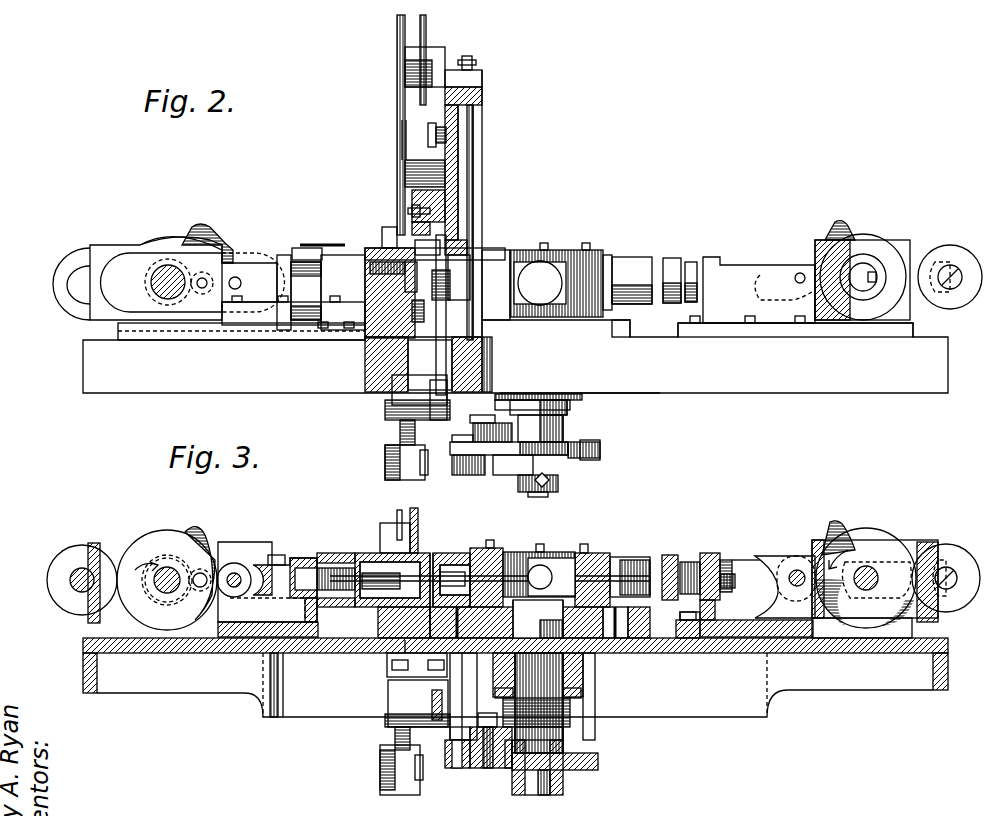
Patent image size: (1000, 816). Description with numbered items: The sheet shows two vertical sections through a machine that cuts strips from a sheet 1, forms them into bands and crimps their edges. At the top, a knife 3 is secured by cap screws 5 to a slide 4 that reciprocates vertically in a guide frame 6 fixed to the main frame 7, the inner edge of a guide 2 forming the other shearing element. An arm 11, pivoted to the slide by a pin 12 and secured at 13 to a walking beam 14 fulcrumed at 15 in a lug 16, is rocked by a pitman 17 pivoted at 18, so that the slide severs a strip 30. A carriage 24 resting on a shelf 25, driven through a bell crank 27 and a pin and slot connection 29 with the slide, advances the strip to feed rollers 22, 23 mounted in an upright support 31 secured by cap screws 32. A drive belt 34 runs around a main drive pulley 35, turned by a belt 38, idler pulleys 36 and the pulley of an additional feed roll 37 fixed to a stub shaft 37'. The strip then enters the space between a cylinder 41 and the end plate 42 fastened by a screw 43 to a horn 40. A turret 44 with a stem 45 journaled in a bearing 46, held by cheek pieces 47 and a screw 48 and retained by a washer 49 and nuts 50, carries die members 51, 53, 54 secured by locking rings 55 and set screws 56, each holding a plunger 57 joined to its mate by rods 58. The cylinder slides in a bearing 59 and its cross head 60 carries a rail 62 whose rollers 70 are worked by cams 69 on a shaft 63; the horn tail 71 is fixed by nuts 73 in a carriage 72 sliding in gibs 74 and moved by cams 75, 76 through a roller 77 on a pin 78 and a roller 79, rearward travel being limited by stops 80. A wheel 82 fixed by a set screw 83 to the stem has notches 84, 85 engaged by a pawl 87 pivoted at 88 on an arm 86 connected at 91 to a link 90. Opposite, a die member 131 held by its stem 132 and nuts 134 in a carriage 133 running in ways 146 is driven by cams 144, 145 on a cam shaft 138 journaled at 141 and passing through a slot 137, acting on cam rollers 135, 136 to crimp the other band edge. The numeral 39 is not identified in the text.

In FIG. 2, the sheet 1 is at (312, 242).
In FIG. 2, the guide 2 is at (370, 248).
In FIG. 2, the knife 3 is at (408, 211).
In FIG. 2, the slide 4 is at (465, 195).
In FIG. 2, the cap screws 5 is at (415, 215).
In FIG. 2, the guide frame 6 is at (483, 95).
In FIG. 2, the main frame 7 is at (378, 358).
In FIG. 3, the main frame 7 is at (122, 680).
In FIG. 2, the arm 11 is at (446, 318).
In FIG. 2, the pin 12 is at (478, 258).
In FIG. 2, the pivot connection 13 is at (478, 395).
In FIG. 2, the walking beam 14 is at (440, 420).
In FIG. 2, the fulcrum 15 is at (385, 412).
In FIG. 3, the fulcrum 15 is at (385, 725).
In FIG. 2, the lug 16 is at (410, 360).
In FIG. 3, the lug 16 is at (400, 660).
In FIG. 2, the pitman 17 is at (400, 437).
In FIG. 3, the pitman 17 is at (395, 740).
In FIG. 2, the pivot 18 is at (385, 467).
In FIG. 3, the pivot 18 is at (380, 775).
In FIG. 2, the feed rollers 22 is at (450, 248).
In FIG. 2, the feed rollers 23 is at (412, 315).
In FIG. 2, the carriage 24 is at (395, 289).
In FIG. 2, the shelf 25 is at (455, 280).
In FIG. 2, the bell crank 27 is at (446, 140).
In FIG. 2, the pin and slot connection 29 is at (428, 132).
In FIG. 3, the severed strip 30 is at (440, 595).
In FIG. 2, the upright support 31 is at (485, 76).
In FIG. 2, the cap screws 32 is at (475, 62).
In FIG. 2, the drive belt 34 is at (398, 142).
In FIG. 2, the main drive pulley 35 is at (398, 36).
In FIG. 2, the idler pulleys 36 is at (410, 160).
In FIG. 3, the additional feed roll 37 is at (439, 528).
In FIG. 3, the stub shaft 37' is at (376, 524).
In FIG. 2, the belt 38 is at (427, 27).
In FIG. 2, the bearing 39 is at (387, 277).
In FIG. 3, the horn 40 is at (350, 570).
In FIG. 3, the cylinder 41 is at (368, 553).
In FIG. 3, the end plate 42 is at (450, 565).
In FIG. 3, the screw 43 is at (380, 625).
In FIG. 2, the turret 44 is at (588, 243).
In FIG. 3, the turret 44 is at (588, 544).
In FIG. 2, the stem 45 is at (563, 430).
In FIG. 3, the stem 45 is at (572, 680).
In FIG. 3, the bearing 46 is at (583, 660).
In FIG. 2, the cheek pieces 47 is at (626, 328).
In FIG. 3, the cheek pieces 47 is at (620, 630).
In FIG. 3, the screw 48 is at (689, 627).
In FIG. 2, the washer 49 is at (585, 397).
In FIG. 3, the washer 49 is at (581, 693).
In FIG. 2, the nuts 50 is at (567, 410).
In FIG. 3, the nuts 50 is at (570, 715).
In FIG. 3, the die member 51 is at (455, 566).
In FIG. 2, the die member 53 is at (632, 280).
In FIG. 3, the die member 53 is at (630, 560).
In FIG. 2, the die member 54 is at (523, 290).
In FIG. 2, the locking rings 55 is at (505, 265).
In FIG. 3, the locking rings 55 is at (480, 553).
In FIG. 2, the set screws 56 is at (545, 243).
In FIG. 3, the set screws 56 is at (543, 544).
In FIG. 2, the plunger 57 is at (540, 283).
In FIG. 3, the plunger 57 is at (640, 587).
In FIG. 3, the rods 58 is at (520, 552).
In FIG. 3, the bearing 59 is at (382, 653).
In FIG. 2, the cross head 60 is at (341, 325).
In FIG. 2, the rail 62 is at (328, 292).
In FIG. 2, the shaft 63 is at (167, 290).
In FIG. 3, the shaft 63 is at (155, 578).
In FIG. 2, the cams 69 is at (203, 293).
In FIG. 3, the cams 69 is at (162, 605).
In FIG. 3, the rollers 70 is at (200, 592).
In FIG. 3, the tail 71 is at (322, 653).
In FIG. 2, the carriage 72 is at (262, 318).
In FIG. 3, the carriage 72 is at (302, 608).
In FIG. 3, the nuts 73 is at (318, 556).
In FIG. 2, the gibs 74 is at (248, 340).
In FIG. 3, the gibs 74 is at (450, 720).
In FIG. 2, the cam 75 is at (160, 236).
In FIG. 3, the cam 75 is at (148, 535).
In FIG. 2, the cam 76 is at (200, 228).
In FIG. 3, the cam 76 is at (197, 530).
In FIG. 3, the roller 77 is at (238, 563).
In FIG. 2, the pin 78 is at (236, 277).
In FIG. 3, the pin 78 is at (236, 590).
In FIG. 2, the roller 79 is at (68, 265).
In FIG. 3, the roller 79 is at (62, 565).
In FIG. 2, the stops 80 is at (282, 255).
In FIG. 3, the stops 80 is at (278, 555).
In FIG. 2, the wheel 82 is at (600, 458).
In FIG. 3, the wheel 82 is at (563, 775).
In FIG. 2, the set screw 83 is at (558, 485).
In FIG. 2, the notches 84 is at (568, 448).
In FIG. 3, the notches 84 is at (598, 765).
In FIG. 2, the notches 85 is at (595, 452).
In FIG. 2, the arm 86 is at (520, 450).
In FIG. 3, the arm 86 is at (512, 760).
In FIG. 2, the pawl 87 is at (468, 475).
In FIG. 3, the pawl 87 is at (478, 768).
In FIG. 2, the pivot 88 is at (455, 445).
In FIG. 3, the pivot 88 is at (455, 755).
In FIG. 2, the link 90 is at (486, 430).
In FIG. 3, the link 90 is at (563, 735).
In FIG. 2, the pivot 91 is at (515, 410).
In FIG. 3, the pivot 91 is at (487, 713).
In FIG. 2, the die member 131 is at (670, 258).
In FIG. 3, the die member 131 is at (668, 555).
In FIG. 3, the stem 132 is at (735, 585).
In FIG. 2, the carriage 133 is at (752, 290).
In FIG. 3, the carriage 133 is at (775, 632).
In FIG. 2, the nuts 134 is at (690, 262).
In FIG. 3, the nuts 134 is at (712, 555).
In FIG. 3, the cam roller 135 is at (800, 556).
In FIG. 2, the cam roller 136 is at (952, 262).
In FIG. 3, the cam roller 136 is at (955, 558).
In FIG. 2, the slot 137 is at (905, 268).
In FIG. 3, the slot 137 is at (885, 565).
In FIG. 2, the cam shaft 138 is at (863, 290).
In FIG. 3, the cam shaft 138 is at (866, 592).
In FIG. 2, the journal 141 is at (870, 258).
In FIG. 2, the cam 144 is at (836, 222).
In FIG. 3, the cam 144 is at (833, 522).
In FIG. 2, the cam 145 is at (830, 255).
In FIG. 3, the cam 145 is at (870, 548).
In FIG. 2, the ways 146 is at (720, 330).
In FIG. 3, the ways 146 is at (690, 640).